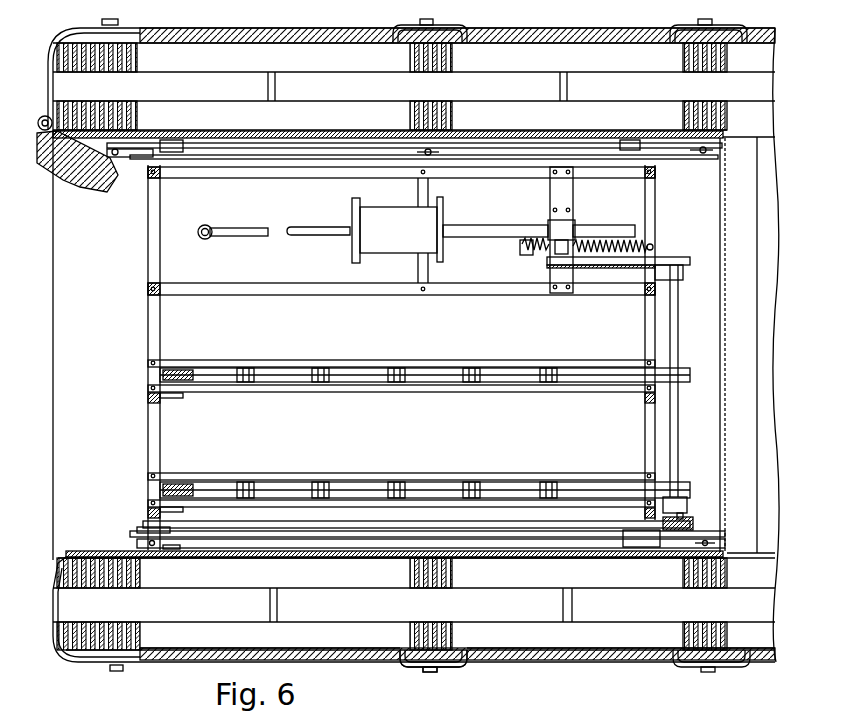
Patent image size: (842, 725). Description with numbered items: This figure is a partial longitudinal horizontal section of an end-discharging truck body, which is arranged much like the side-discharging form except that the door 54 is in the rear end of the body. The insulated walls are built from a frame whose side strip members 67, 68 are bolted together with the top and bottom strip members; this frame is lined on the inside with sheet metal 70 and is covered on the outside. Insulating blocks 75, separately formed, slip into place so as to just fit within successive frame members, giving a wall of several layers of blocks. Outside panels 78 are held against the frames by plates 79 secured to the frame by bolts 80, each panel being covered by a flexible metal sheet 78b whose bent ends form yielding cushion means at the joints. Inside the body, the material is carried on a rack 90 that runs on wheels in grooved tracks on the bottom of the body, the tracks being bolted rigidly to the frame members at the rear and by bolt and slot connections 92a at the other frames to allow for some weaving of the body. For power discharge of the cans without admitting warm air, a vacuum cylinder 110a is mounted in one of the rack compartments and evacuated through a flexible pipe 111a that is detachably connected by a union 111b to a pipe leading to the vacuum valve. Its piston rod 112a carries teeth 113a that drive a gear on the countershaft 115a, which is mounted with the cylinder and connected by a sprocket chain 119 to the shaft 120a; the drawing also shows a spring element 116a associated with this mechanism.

The door 54 is at (93, 187).
The side strip member 67 is at (412, 55).
The side strip member 68 is at (412, 120).
The sheet metal lining 70 is at (718, 400).
The insulating blocks 75 is at (414, 345).
The outside panels 78 is at (360, 656).
The flexible metal sheet 78b is at (575, 657).
The plates 79 is at (457, 663).
The bolts 80 is at (434, 670).
The rack 90 is at (153, 318).
The bolt and slot connections 92a is at (432, 150).
The vacuum cylinder 110a is at (360, 220).
The pipe 111a is at (305, 236).
The union 111b is at (205, 226).
The piston rod 112a is at (500, 217).
The teeth 113a is at (604, 228).
The countershaft 115a is at (557, 253).
The spring 116a is at (644, 240).
The sprocket chain 119 is at (658, 257).
The shaft 120a is at (678, 342).